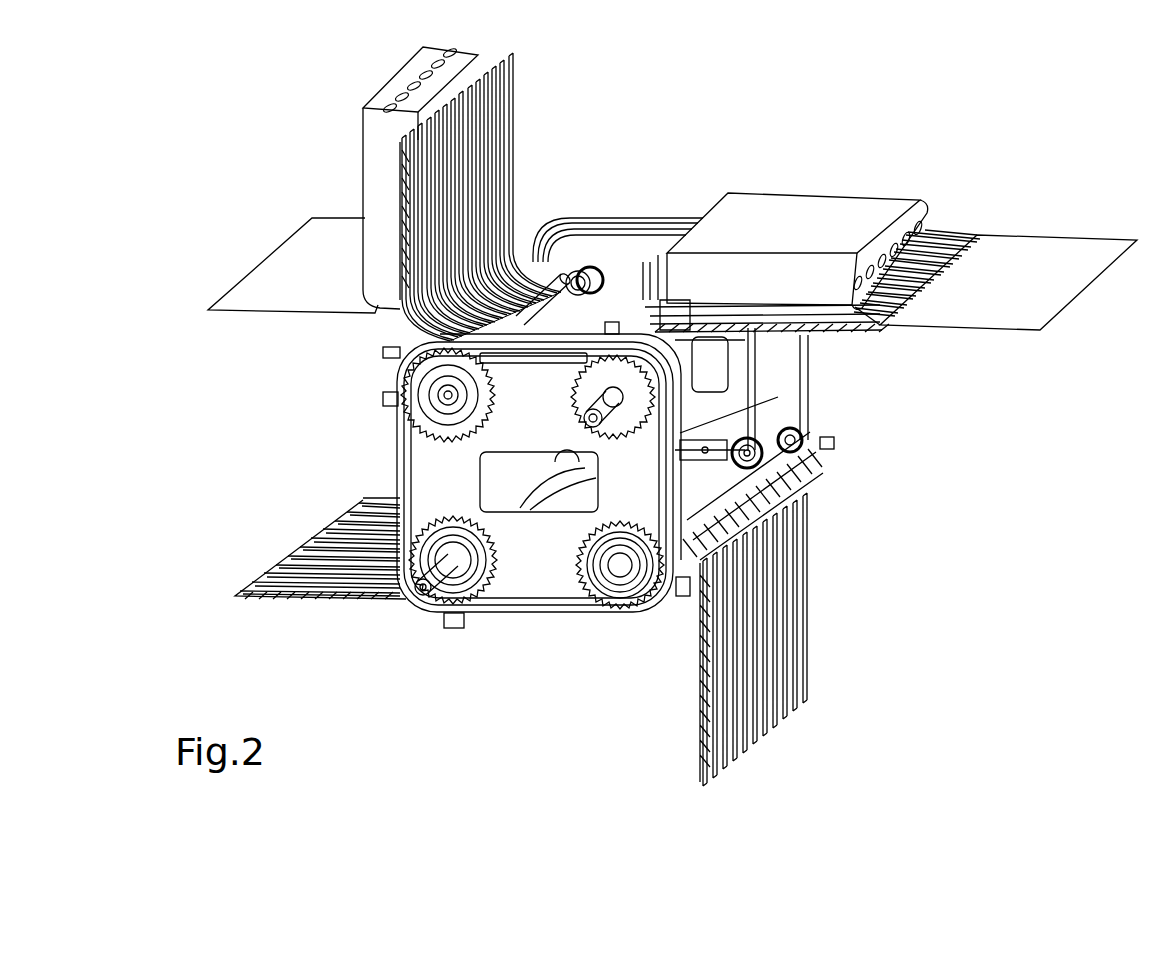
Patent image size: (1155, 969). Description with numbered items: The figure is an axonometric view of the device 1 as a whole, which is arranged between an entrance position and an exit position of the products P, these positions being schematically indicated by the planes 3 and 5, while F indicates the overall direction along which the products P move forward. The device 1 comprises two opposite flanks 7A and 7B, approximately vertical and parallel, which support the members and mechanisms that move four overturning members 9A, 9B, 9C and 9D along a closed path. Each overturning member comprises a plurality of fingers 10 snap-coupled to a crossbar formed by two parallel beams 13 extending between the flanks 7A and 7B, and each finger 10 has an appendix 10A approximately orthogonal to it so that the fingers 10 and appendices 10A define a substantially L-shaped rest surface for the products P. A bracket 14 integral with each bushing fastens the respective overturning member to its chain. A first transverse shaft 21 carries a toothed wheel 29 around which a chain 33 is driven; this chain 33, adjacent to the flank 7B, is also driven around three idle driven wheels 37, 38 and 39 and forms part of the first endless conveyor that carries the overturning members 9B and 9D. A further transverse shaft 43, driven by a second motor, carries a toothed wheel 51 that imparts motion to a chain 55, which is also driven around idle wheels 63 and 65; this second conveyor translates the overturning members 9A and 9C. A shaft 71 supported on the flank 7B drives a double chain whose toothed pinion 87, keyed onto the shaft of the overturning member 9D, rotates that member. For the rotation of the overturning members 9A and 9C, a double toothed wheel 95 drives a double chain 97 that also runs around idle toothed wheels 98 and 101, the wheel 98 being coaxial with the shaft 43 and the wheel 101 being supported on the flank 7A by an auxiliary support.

The device 1 is at (960, 120).
The plane 3 is at (1062, 290).
The plane 5 is at (262, 300).
The flank 7A is at (596, 207).
The flank 7B is at (675, 405).
The overturning member 9A is at (530, 137).
The overturning member 9B is at (390, 614).
The overturning member 9C is at (820, 536).
The overturning member 9D is at (856, 346).
The finger 10 is at (513, 190).
The appendix 10A is at (385, 357).
The beam 13 is at (822, 444).
The bracket 14 is at (609, 322).
The first transverse shaft 21 is at (593, 404).
The second toothed wheel 29 is at (623, 381).
The chain 33 is at (400, 430).
The idle driven wheel 37 is at (597, 590).
The idle driven wheel 38 is at (478, 585).
The idle driven wheel 39 is at (449, 430).
The transverse shaft 43 is at (559, 296).
The second toothed wheel 51 is at (494, 393).
The chain 55 is at (412, 483).
The idle wheel 63 is at (498, 548).
The idle wheel 65 is at (615, 526).
The shaft 71 is at (430, 607).
The toothed pinion 87 is at (665, 306).
The double toothed wheel 95 is at (788, 385).
The double chain 97 is at (658, 255).
The idle toothed wheel 98 is at (645, 262).
The idle wheel 101 is at (785, 447).
The products P is at (373, 127).
The direction F is at (800, 85).